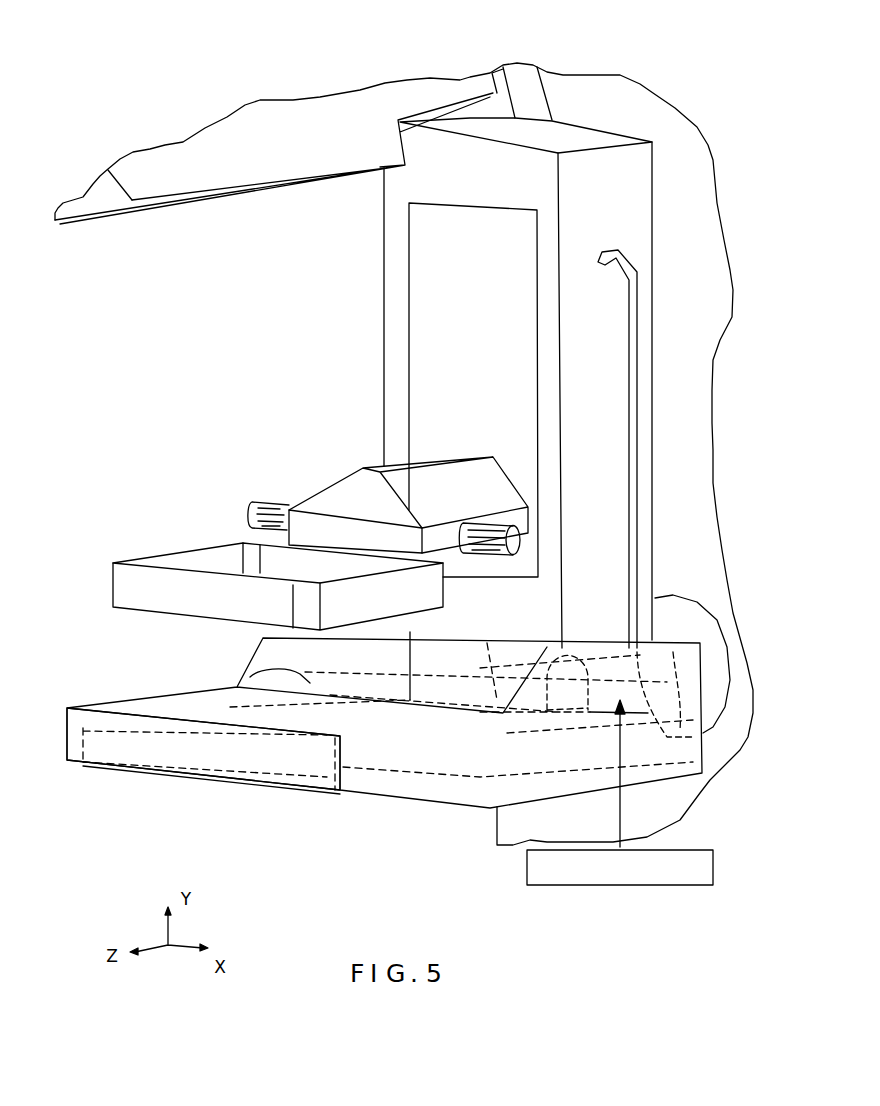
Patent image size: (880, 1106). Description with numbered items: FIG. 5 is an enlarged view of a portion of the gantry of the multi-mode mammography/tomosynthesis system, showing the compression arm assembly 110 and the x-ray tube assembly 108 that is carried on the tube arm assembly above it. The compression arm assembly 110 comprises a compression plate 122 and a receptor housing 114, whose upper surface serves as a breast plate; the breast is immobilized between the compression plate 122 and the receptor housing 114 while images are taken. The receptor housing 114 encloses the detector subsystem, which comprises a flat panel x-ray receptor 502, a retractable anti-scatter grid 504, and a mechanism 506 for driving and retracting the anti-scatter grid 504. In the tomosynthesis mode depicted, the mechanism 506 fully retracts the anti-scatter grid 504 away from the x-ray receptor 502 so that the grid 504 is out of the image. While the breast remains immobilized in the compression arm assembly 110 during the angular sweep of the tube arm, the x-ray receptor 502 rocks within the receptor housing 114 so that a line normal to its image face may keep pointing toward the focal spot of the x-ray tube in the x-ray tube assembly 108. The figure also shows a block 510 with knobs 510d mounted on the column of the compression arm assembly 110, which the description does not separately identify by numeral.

The x-ray tube assembly 108 is at (207, 178).
The compression arm assembly 110 is at (393, 233).
The receptor housing 114 is at (413, 792).
The compression plate 122 is at (160, 553).
The flat panel x-ray receptor 502 is at (210, 747).
The retractable anti-scatter grid 504 is at (247, 673).
The mechanism for driving and retracting anti-scatter grid 506 is at (665, 882).
The head block 510 is at (377, 470).
The knob 510d is at (267, 500).